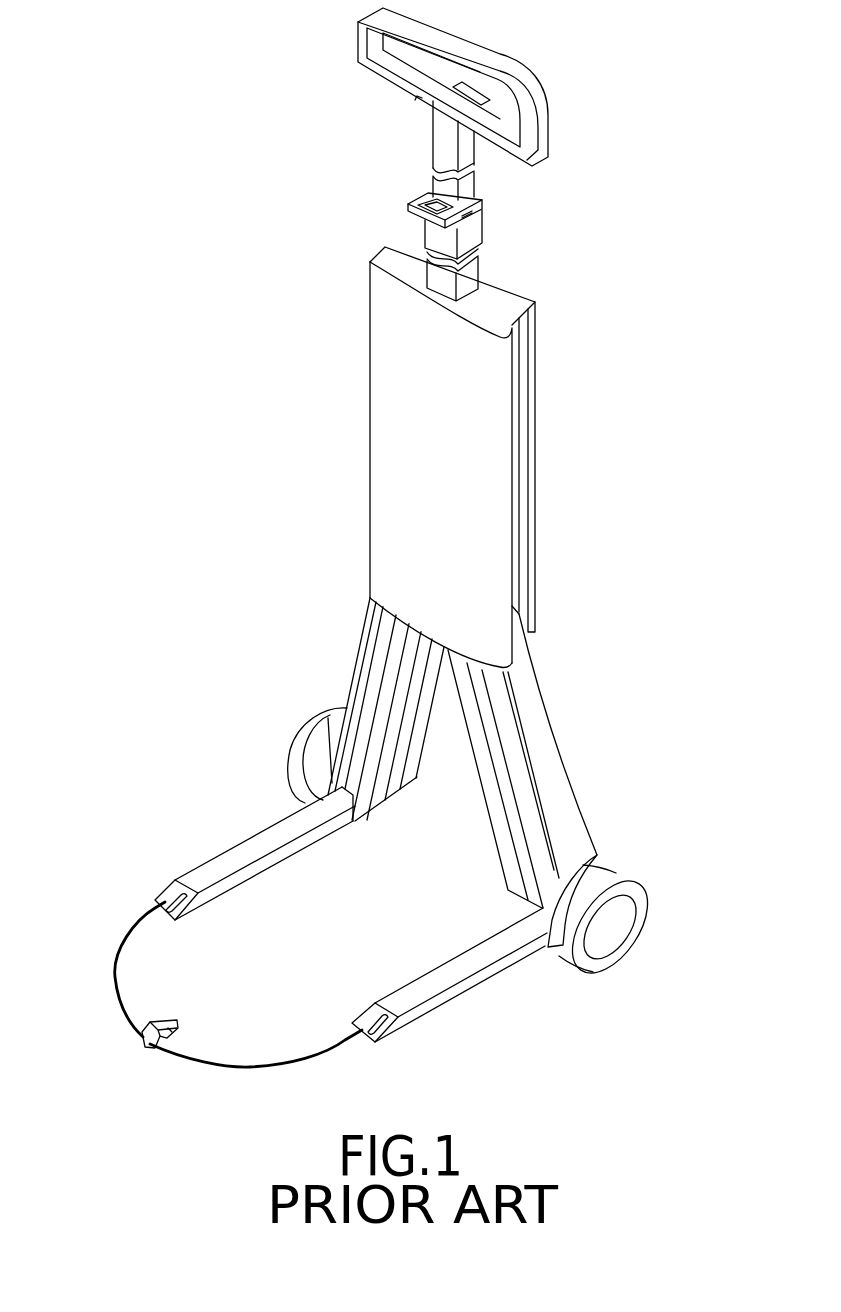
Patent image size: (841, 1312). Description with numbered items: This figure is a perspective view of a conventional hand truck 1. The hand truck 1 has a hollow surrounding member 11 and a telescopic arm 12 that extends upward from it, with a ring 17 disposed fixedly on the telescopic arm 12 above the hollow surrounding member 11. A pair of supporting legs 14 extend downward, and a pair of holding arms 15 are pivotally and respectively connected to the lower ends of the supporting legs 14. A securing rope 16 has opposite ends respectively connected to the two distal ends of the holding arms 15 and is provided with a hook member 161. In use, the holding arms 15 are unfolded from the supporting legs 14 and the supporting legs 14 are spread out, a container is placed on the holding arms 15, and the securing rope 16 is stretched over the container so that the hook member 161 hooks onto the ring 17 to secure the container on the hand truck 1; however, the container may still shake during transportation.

The hand truck 1 is at (356, 554).
The hollow surrounding member 11 is at (398, 396).
The telescopic arm 12 is at (473, 233).
The supporting legs 14 is at (385, 652).
The holding arms 15 is at (243, 853).
The securing rope 16 is at (113, 977).
The hook member 161 is at (173, 1018).
The ring 17 is at (412, 196).